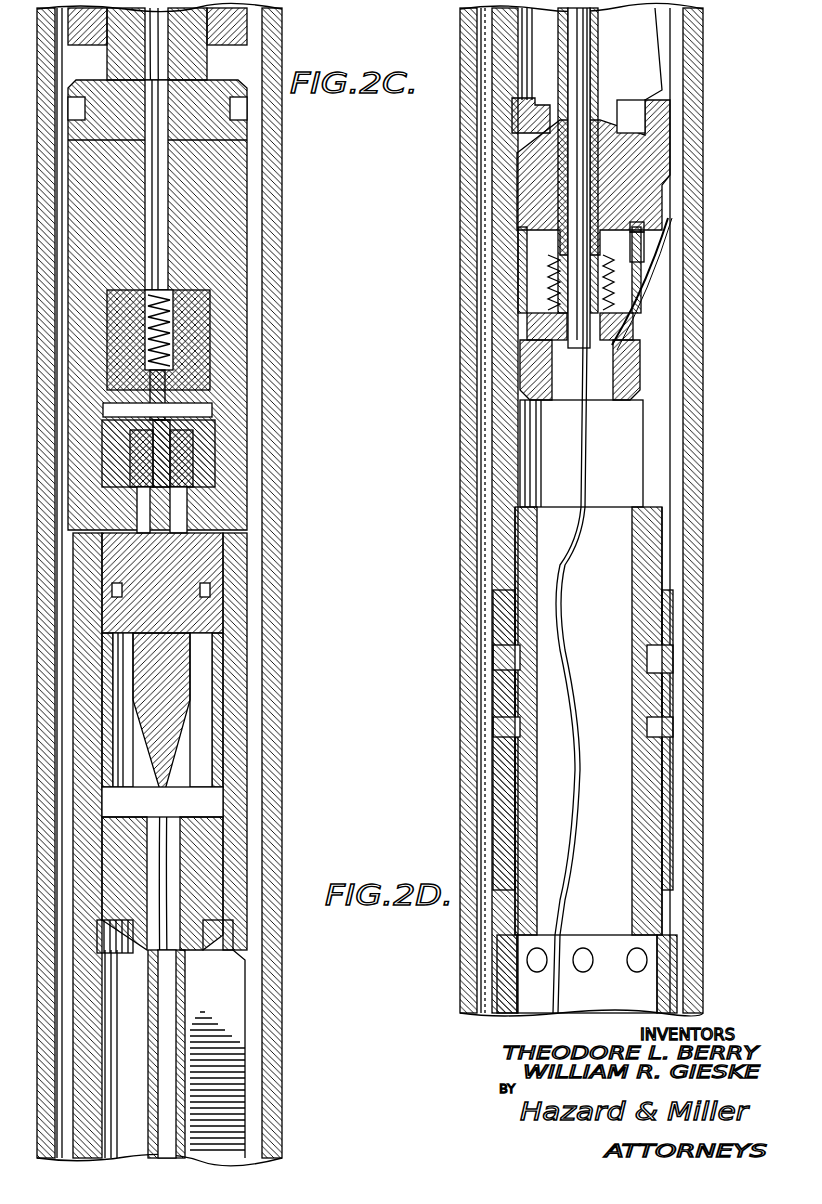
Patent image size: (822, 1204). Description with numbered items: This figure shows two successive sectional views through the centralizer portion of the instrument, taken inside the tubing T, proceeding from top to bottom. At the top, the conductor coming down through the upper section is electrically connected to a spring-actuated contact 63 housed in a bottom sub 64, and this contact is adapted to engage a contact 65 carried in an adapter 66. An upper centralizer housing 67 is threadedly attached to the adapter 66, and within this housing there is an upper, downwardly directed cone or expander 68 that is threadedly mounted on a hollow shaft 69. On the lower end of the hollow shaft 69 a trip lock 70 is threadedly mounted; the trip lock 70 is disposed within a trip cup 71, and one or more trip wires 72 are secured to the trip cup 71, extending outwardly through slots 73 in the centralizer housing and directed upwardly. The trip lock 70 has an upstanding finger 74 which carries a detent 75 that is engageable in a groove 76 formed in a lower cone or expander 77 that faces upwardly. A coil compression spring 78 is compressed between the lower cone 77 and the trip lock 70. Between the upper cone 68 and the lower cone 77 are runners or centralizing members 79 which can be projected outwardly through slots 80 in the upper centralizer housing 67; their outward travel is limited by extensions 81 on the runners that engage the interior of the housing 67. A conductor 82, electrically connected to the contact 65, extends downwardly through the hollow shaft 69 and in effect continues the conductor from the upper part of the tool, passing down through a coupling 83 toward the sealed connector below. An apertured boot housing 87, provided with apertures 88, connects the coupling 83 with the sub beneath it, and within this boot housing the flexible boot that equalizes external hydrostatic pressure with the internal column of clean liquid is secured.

In FIG. 2C, the bottom sub 64 is at (250, 216).
In FIG. 2C, the spring-actuated contact 63 is at (195, 362).
In FIG. 2C, the contact 65 is at (165, 452).
In FIG. 2C, the tubing T is at (270, 494).
In FIG. 2D, the tubing T is at (460, 494).
In FIG. 2C, the adapter 66 is at (245, 573).
In FIG. 2C, the conductor 82 is at (168, 800).
In FIG. 2D, the conductor 82 is at (553, 992).
In FIG. 2C, the upper cone or expander 68 is at (210, 828).
In FIG. 2C, the upper centralizer housing 67 is at (250, 853).
In FIG. 2C, the extensions 81 is at (210, 938).
In FIG. 2D, the extensions 81 is at (605, 118).
In FIG. 2C, the runners or centralizing members 79 is at (240, 963).
In FIG. 2D, the runners or centralizing members 79 is at (655, 19).
In FIG. 2C, the hollow shaft 69 is at (235, 1010).
In FIG. 2D, the hollow shaft 69 is at (560, 33).
In FIG. 2D, the slots 80 is at (660, 95).
In FIG. 2D, the lower cone or expander 77 is at (633, 170).
In FIG. 2D, the groove 76 is at (520, 243).
In FIG. 2D, the detent 75 is at (642, 230).
In FIG. 2D, the upstanding finger 74 is at (642, 258).
In FIG. 2D, the coil compression spring 78 is at (553, 290).
In FIG. 2D, the trip wires 72 is at (672, 292).
In FIG. 2D, the trip lock 70 is at (530, 330).
In FIG. 2D, the trip cup 71 is at (525, 375).
In FIG. 2D, the slots 73 is at (655, 412).
In FIG. 2D, the coupling 83 is at (530, 693).
In FIG. 2D, the apertures 88 is at (665, 952).
In FIG. 2D, the apertured boot housing 87 is at (690, 990).